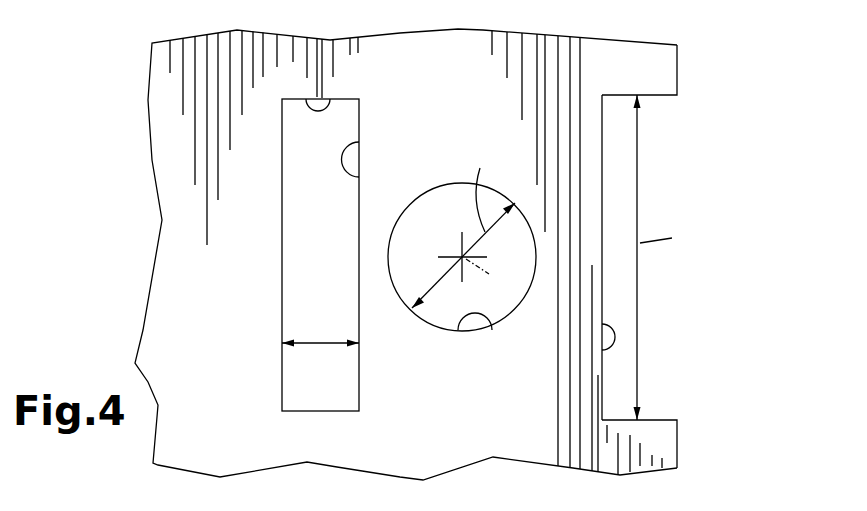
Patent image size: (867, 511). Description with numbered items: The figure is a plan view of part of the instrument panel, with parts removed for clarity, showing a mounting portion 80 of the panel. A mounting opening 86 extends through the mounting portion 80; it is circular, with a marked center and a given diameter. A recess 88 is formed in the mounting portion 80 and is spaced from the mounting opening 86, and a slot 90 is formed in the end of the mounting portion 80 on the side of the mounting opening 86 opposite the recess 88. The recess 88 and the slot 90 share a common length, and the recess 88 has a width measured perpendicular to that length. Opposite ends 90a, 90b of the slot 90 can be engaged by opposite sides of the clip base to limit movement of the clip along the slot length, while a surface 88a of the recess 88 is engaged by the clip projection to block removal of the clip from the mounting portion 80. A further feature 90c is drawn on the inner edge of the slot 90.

The mounting portion 80 is at (184, 148).
The mounting opening 86 is at (463, 317).
The recess 88 is at (308, 97).
The surface of the recess 88a is at (359, 142).
The slot 90 is at (612, 405).
The end of the slot 90a is at (653, 96).
The end of the slot 90b is at (660, 420).
The notch inner edge 90c is at (618, 346).